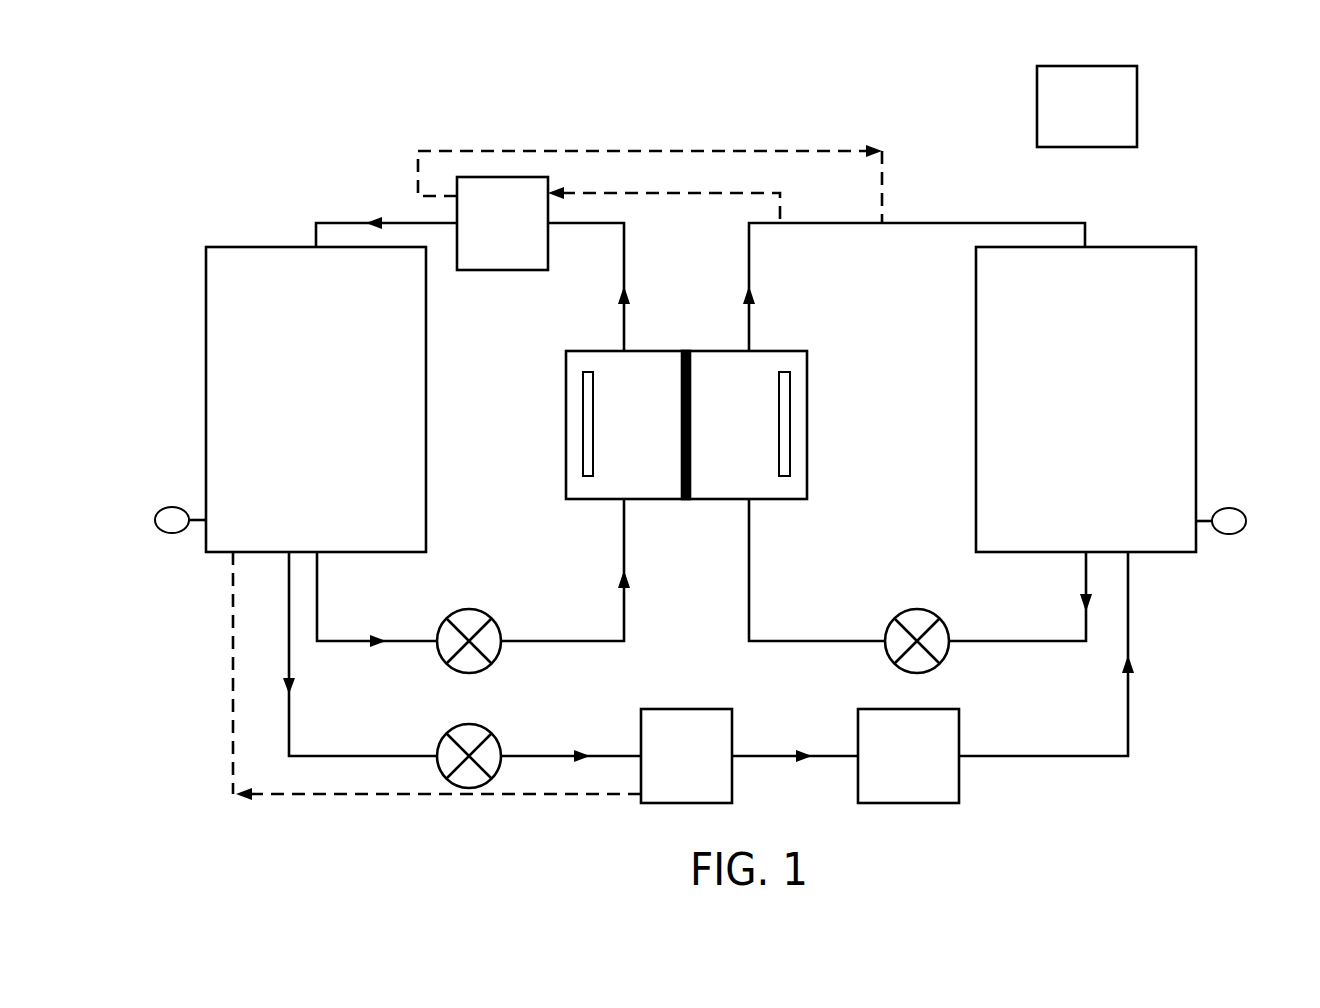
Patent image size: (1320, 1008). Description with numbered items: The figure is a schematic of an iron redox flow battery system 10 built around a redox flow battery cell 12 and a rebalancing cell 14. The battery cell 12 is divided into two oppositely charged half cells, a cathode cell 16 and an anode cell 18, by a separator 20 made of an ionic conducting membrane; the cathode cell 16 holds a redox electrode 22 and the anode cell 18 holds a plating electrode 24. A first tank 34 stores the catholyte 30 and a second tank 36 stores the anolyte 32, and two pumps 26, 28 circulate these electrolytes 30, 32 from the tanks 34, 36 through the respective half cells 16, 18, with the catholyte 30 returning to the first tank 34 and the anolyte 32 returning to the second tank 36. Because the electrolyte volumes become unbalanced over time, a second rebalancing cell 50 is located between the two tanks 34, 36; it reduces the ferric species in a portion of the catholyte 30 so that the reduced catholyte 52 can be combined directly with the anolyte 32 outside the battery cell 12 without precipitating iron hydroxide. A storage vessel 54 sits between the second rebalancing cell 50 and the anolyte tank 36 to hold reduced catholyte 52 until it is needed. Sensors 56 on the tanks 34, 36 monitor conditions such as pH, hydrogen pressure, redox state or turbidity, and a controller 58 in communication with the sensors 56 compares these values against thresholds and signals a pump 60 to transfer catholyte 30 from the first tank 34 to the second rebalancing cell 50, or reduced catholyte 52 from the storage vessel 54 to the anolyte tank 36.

The iron redox flow battery system 10 is at (196, 160).
The redox flow battery cell 12 is at (686, 316).
The rebalancing cell 14 is at (496, 176).
The cathode cell 16 is at (566, 468).
The anode cell 18 is at (807, 468).
The separator 20 is at (690, 460).
The redox electrode 22 is at (583, 402).
The plating electrode 24 is at (790, 402).
The pump 26 is at (469, 609).
The pump 28 is at (917, 609).
The catholyte 30 is at (317, 597).
The anolyte 32 is at (1084, 580).
The first tank 34 is at (206, 398).
The second tank 36 is at (1196, 335).
The second rebalancing cell 50 is at (686, 708).
The reduced catholyte 52 is at (763, 754).
The storage vessel 54 is at (942, 708).
The sensor 56 is at (155, 520).
The controller 58 is at (1120, 65).
The pump 60 is at (460, 725).